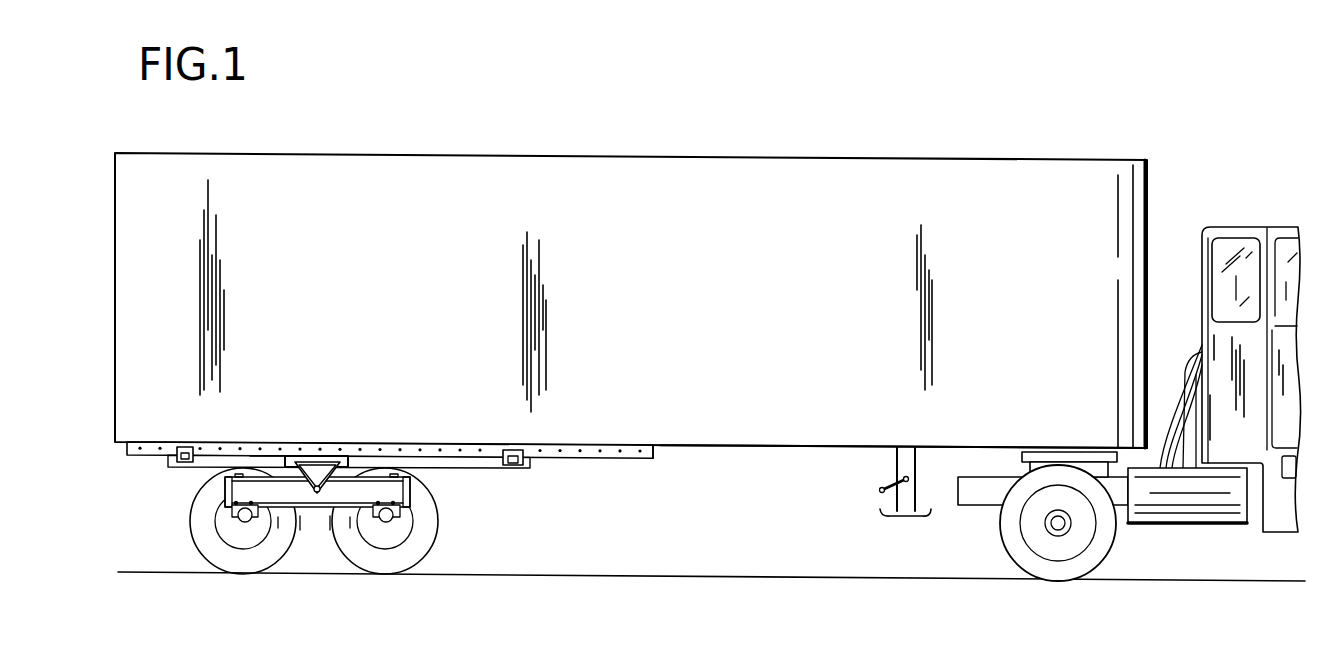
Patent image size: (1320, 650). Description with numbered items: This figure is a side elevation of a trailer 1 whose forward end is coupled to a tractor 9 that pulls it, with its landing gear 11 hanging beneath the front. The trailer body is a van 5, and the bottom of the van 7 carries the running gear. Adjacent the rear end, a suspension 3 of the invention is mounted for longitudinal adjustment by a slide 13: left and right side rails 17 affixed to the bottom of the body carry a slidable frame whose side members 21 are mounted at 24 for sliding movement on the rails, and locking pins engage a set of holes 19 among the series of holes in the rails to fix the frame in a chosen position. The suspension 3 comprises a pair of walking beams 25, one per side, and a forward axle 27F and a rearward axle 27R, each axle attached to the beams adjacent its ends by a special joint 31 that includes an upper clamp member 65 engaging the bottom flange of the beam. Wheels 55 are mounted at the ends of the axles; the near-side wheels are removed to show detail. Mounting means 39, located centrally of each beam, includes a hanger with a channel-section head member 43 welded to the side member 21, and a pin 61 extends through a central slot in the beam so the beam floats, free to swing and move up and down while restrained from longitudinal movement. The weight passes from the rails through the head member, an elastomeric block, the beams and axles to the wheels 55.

The trailer 1 is at (293, 145).
The suspension 3 is at (172, 523).
The van 5 is at (669, 335).
The bottom of the van 7 is at (756, 450).
The tractor 9 is at (1213, 228).
The landing gear 11 is at (905, 514).
The slide 13 is at (661, 467).
The side rails 17 is at (390, 427).
The holes 19 is at (458, 447).
The side members 21 is at (530, 470).
The sliding mounting 24 is at (185, 446).
The walking beams 25 is at (371, 478).
The rearward axle 27R is at (255, 522).
The forward axle 27F is at (388, 522).
The special joint 31 is at (236, 517).
The mounting means 39 is at (329, 444).
The head member 43 is at (269, 429).
The wheels 55 is at (317, 545).
The pin 61 is at (318, 498).
The upper clamp member 65 is at (232, 512).